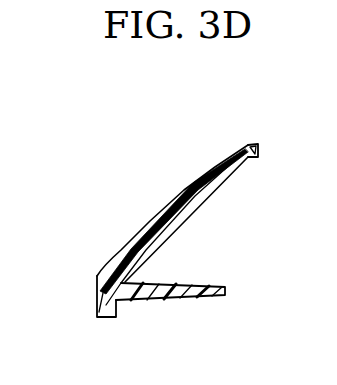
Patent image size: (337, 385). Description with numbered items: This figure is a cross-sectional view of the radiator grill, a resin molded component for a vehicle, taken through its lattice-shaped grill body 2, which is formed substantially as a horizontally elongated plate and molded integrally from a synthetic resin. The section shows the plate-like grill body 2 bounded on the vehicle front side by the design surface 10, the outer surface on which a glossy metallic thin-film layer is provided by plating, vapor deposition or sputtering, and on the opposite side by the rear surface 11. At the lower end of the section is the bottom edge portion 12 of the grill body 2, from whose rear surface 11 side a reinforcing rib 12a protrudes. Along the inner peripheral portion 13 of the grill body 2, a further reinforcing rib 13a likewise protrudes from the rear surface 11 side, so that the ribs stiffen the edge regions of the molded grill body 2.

The grill body 2 is at (185, 178).
The design surface 10 is at (177, 197).
The rear surface 11 is at (199, 209).
The bottom edge portion 12 is at (97, 312).
The reinforcing rib 12a is at (164, 300).
The inner peripheral portion 13 is at (249, 145).
The reinforcing rib 13a is at (257, 156).